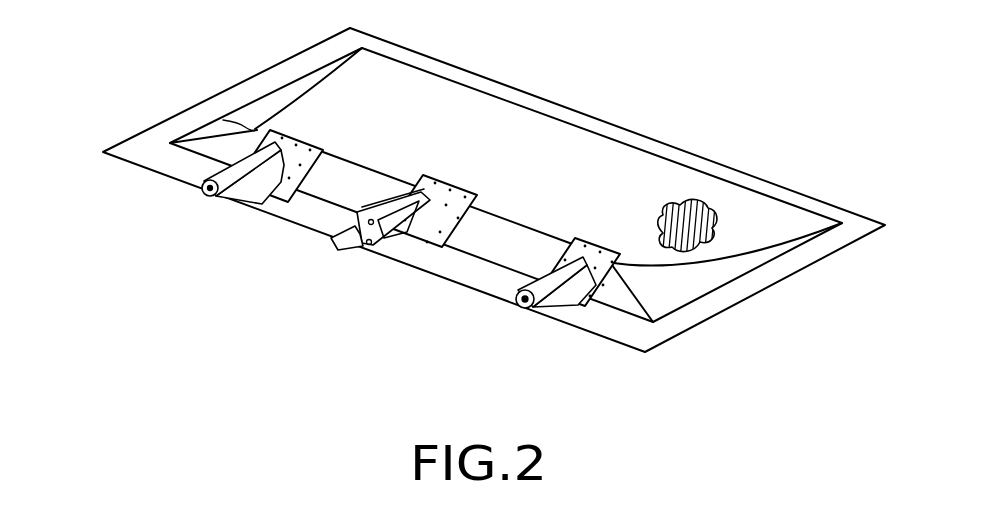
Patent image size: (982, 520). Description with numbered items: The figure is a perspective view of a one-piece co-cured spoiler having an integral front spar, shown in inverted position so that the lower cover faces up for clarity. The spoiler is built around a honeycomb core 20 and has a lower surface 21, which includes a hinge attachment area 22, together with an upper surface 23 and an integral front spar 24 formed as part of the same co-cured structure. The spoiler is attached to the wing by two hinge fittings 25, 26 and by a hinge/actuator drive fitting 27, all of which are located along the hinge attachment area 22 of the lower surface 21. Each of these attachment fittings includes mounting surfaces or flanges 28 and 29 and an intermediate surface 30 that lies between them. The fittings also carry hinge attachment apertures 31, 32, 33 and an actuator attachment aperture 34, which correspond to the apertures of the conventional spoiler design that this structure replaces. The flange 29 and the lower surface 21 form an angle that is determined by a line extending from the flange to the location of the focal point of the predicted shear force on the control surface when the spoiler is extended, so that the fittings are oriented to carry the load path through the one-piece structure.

The honeycomb core 20 is at (714, 208).
The lower surface 21 is at (590, 140).
The hinge attachment area 22 is at (488, 204).
The upper surface 23 is at (732, 294).
The integral front spar 24 is at (449, 236).
The hinge fitting 25 is at (202, 186).
The hinge fitting 26 is at (418, 181).
The hinge/actuator drive fitting 27 is at (575, 240).
The mounting surface or flange 28 is at (537, 310).
The mounting surface or flange 29 is at (223, 120).
The intermediate surface 30 is at (272, 188).
The hinge attachment aperture 31 is at (518, 305).
The hinge attachment aperture 32 is at (363, 253).
The hinge attachment aperture 33 is at (200, 207).
The actuator attachment aperture 34 is at (340, 242).